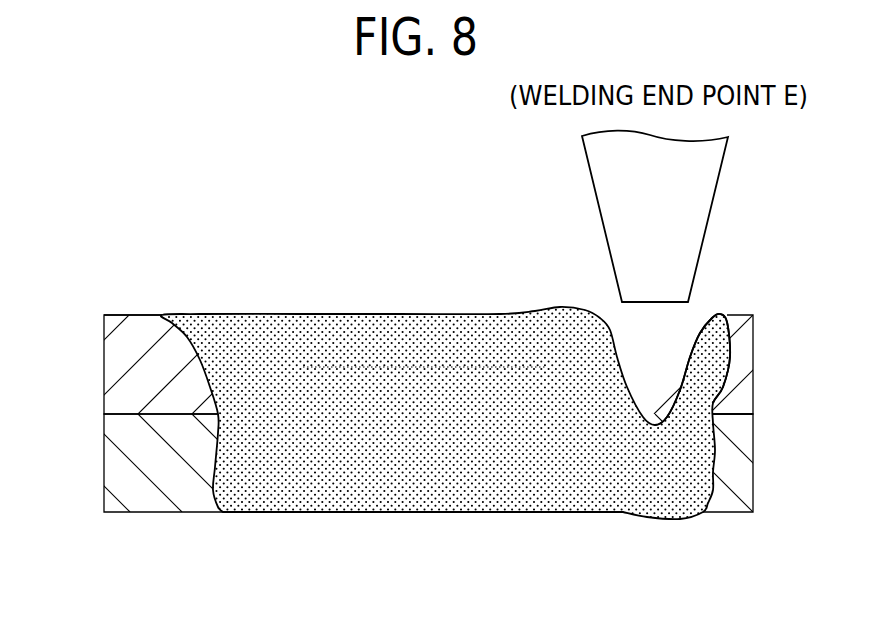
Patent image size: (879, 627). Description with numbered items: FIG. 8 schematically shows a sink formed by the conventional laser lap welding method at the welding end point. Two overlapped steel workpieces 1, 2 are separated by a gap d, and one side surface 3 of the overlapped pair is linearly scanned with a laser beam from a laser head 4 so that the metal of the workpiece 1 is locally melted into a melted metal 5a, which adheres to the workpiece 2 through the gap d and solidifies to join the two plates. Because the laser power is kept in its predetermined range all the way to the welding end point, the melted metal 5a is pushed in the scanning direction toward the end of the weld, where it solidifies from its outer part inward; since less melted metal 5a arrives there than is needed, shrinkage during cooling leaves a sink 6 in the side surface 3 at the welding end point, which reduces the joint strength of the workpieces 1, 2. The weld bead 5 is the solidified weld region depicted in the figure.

The workpiece 1 is at (92, 357).
The workpiece 2 is at (92, 465).
The side surface 3 is at (140, 314).
The laser head 4 is at (693, 206).
The weld metal (weld bead) 5 is at (397, 308).
The melted metal 5a is at (355, 488).
The sink 6 is at (687, 352).
The gap d is at (733, 414).